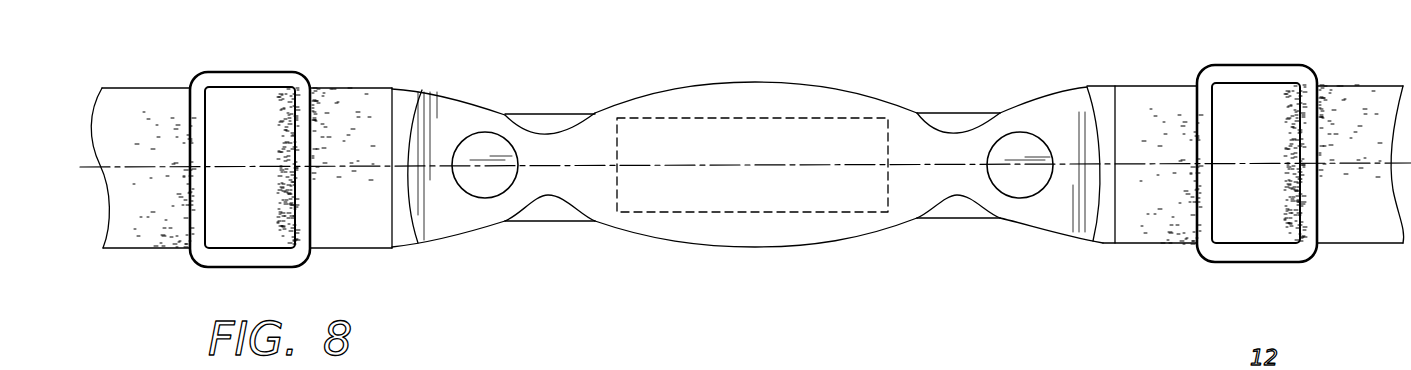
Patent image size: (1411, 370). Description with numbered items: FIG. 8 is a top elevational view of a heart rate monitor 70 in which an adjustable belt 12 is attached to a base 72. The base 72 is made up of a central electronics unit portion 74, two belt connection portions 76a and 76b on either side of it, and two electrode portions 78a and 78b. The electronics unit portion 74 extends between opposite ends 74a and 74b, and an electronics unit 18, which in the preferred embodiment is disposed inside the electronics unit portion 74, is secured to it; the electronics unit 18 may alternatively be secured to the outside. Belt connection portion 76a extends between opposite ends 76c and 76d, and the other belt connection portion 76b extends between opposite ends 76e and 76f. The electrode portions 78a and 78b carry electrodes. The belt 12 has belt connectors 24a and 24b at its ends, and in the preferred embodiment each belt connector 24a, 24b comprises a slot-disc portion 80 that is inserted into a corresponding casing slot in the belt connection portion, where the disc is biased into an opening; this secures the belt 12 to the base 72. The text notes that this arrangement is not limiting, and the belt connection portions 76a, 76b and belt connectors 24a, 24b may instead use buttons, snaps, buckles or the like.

The belt 12 is at (1150, 90).
The electronics unit 18 is at (735, 202).
The belt connector 24a is at (403, 102).
The belt connector 24b is at (1102, 232).
The heart rate monitor 70 is at (962, 90).
The base 72 is at (828, 80).
The electronics unit portion 74 is at (670, 107).
The end of electronics unit portion 74a is at (593, 127).
The end of electronics unit portion 74b is at (920, 135).
The belt connection portion 76a is at (493, 123).
The belt connection portion 76b is at (1055, 100).
The end of belt connection portion 76c is at (593, 202).
The end of belt connection portion 76d is at (445, 110).
The end of belt connection portion 76e is at (900, 207).
The end of belt connection portion 76f is at (1070, 218).
The electrode portion 78a is at (550, 208).
The electrode portion 78b is at (962, 210).
The slot-disc portion 80 is at (472, 187).